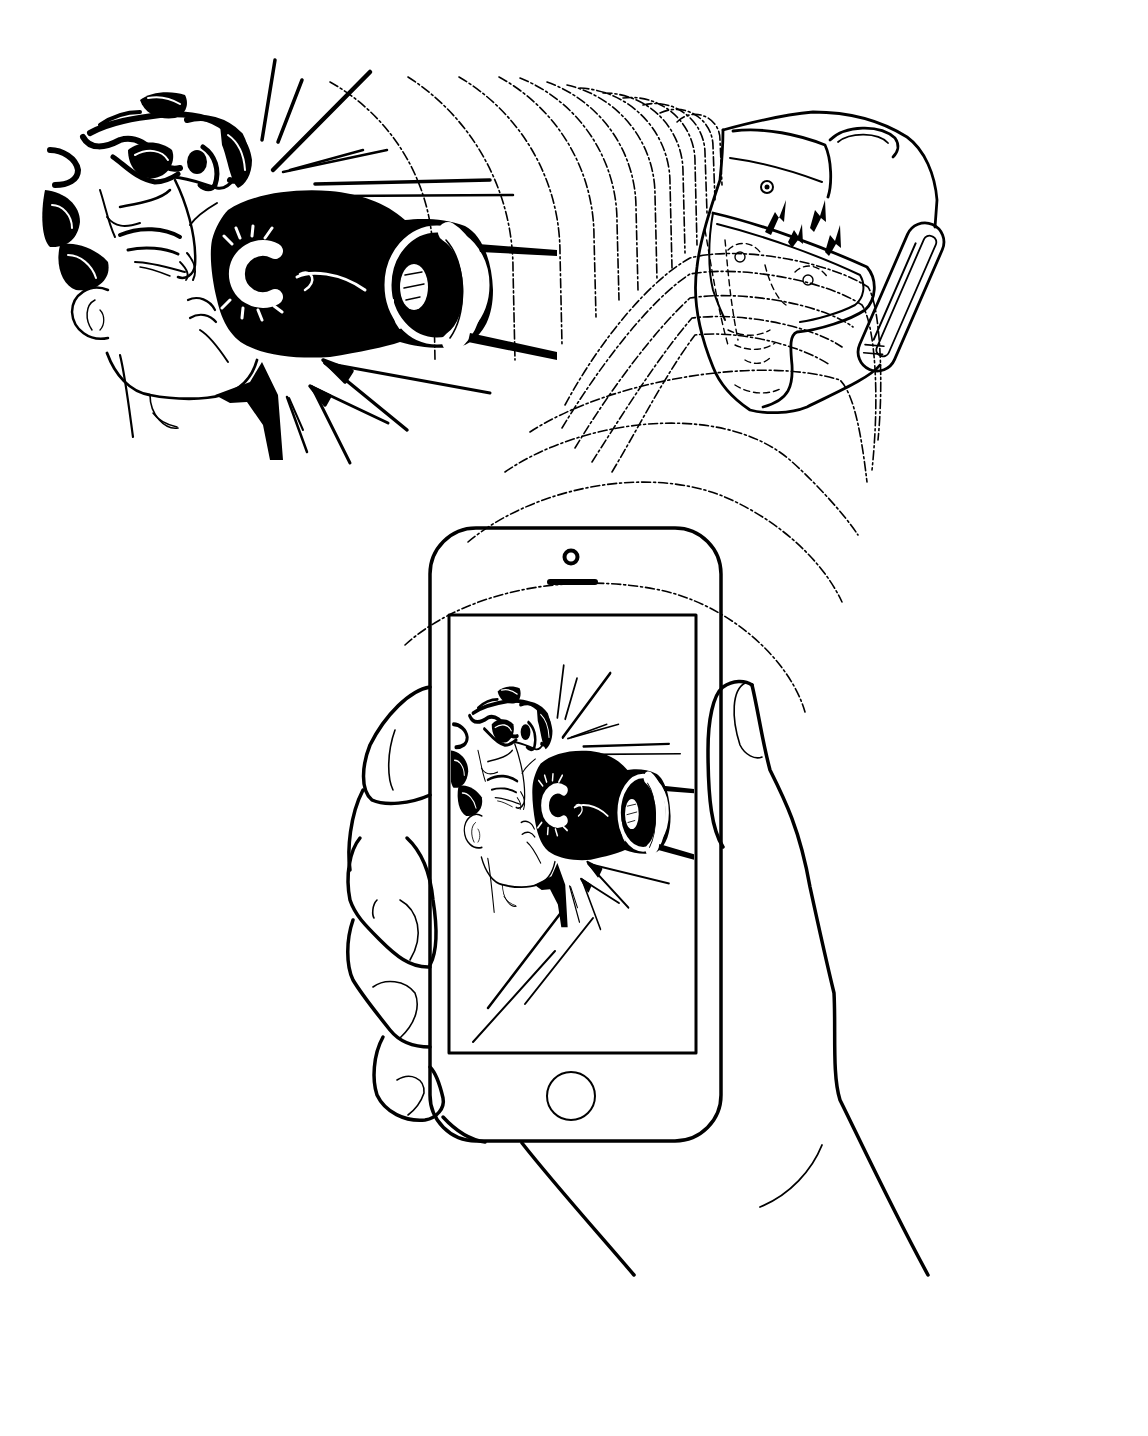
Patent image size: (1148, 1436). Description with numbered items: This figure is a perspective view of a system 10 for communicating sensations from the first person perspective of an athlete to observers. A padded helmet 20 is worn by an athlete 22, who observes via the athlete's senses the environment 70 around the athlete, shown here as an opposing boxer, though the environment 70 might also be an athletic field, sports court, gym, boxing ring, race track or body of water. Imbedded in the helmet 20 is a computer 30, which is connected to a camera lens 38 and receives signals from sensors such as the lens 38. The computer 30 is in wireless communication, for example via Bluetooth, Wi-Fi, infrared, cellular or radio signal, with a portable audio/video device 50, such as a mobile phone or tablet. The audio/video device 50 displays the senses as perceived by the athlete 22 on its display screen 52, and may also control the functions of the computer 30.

The system 10 is at (247, 578).
The padded helmet 20 is at (898, 195).
The athlete 22 is at (840, 285).
The computer 30 is at (760, 186).
The camera lens 38 is at (771, 184).
The portable audio/video device 50 is at (697, 592).
The display screen 52 is at (657, 637).
The environment 70 is at (128, 112).